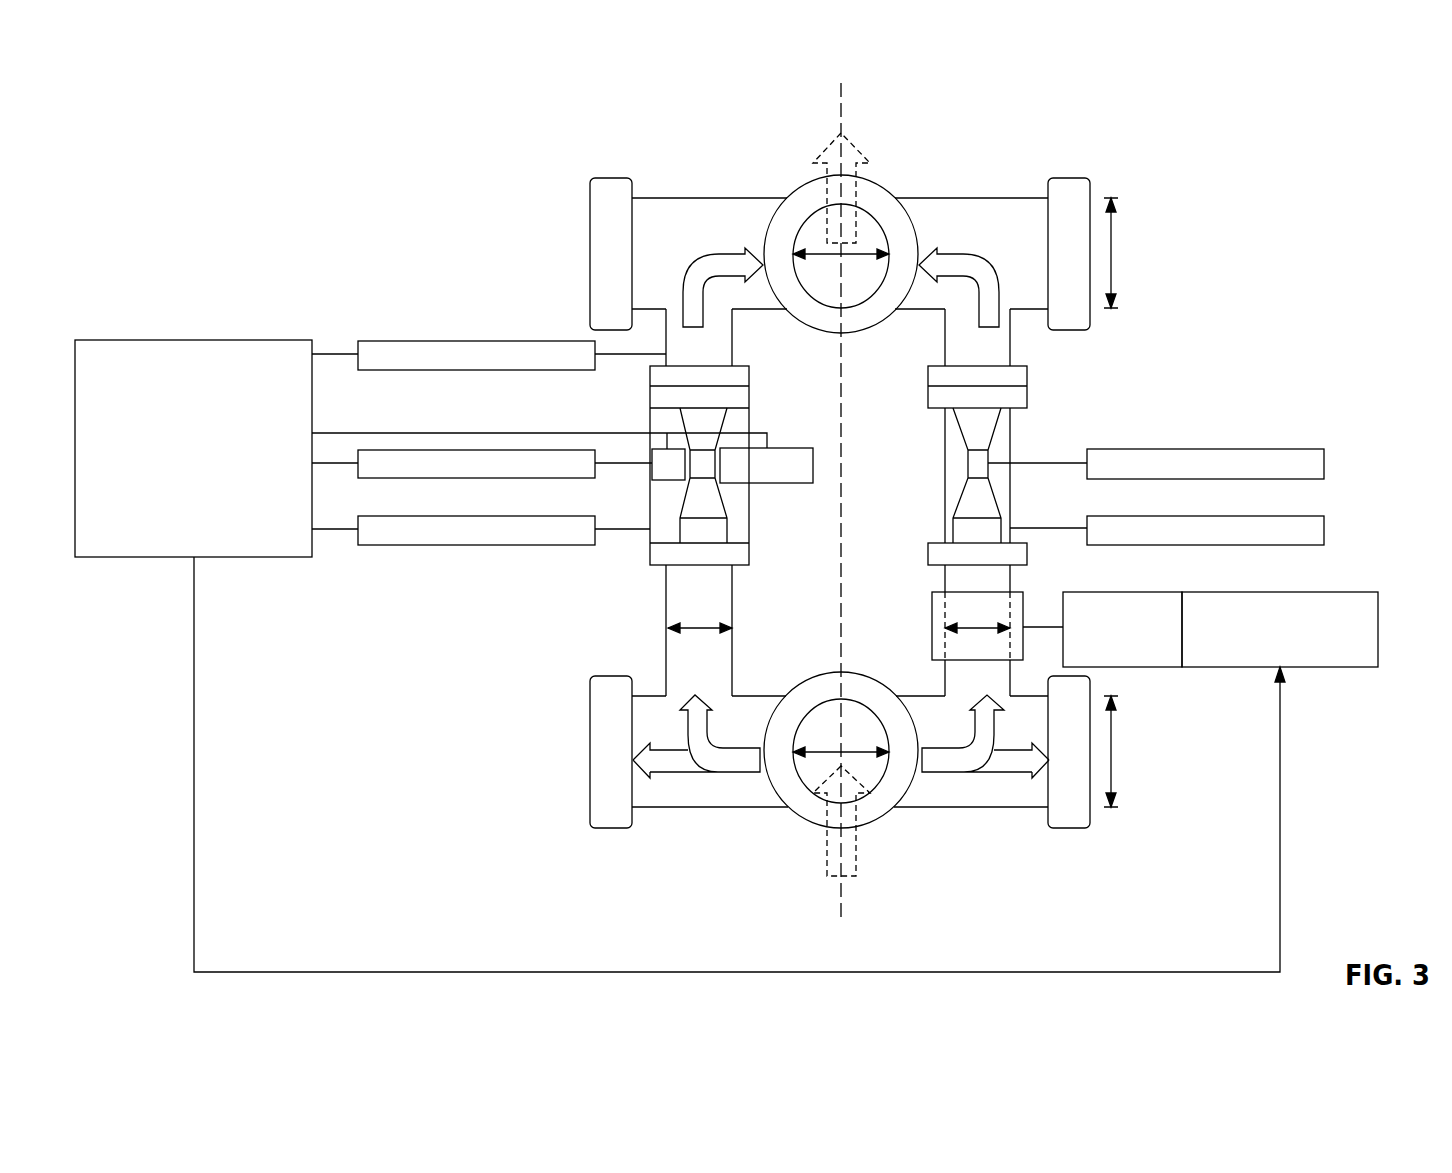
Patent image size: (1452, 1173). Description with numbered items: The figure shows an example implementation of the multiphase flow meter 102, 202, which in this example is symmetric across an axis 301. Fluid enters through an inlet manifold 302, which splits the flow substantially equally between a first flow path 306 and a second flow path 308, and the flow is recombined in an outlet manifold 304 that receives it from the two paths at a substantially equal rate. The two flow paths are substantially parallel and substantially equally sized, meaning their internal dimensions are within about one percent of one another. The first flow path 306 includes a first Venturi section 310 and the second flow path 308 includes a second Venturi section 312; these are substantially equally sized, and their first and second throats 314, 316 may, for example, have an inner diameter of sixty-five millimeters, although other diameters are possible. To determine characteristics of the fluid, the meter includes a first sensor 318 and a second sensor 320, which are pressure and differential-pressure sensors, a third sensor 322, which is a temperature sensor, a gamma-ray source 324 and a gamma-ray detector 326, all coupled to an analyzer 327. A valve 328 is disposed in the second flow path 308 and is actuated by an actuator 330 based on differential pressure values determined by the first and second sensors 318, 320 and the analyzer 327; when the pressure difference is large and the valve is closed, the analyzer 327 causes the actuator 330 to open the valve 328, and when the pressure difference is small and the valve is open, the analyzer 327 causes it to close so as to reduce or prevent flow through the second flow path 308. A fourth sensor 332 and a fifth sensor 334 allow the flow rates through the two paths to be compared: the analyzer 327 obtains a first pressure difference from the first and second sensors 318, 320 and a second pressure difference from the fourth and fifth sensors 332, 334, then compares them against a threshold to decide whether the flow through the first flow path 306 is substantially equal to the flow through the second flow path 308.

The multiphase flow meter 102 is at (1189, 115).
The multiphase flow meter 202 is at (931, 501).
The axis 301 is at (840, 122).
The inlet manifold 302 is at (670, 807).
The outlet manifold 304 is at (648, 198).
The first flow path 306 is at (668, 602).
The second flow path 308 is at (1012, 583).
The first Venturi section 310 is at (750, 553).
The second Venturi section 312 is at (940, 565).
The first throat 314 is at (703, 480).
The second throat 316 is at (977, 450).
The first sensor 318 is at (428, 516).
The second sensor 320 is at (442, 450).
The third sensor 322 is at (428, 341).
The source 324 is at (665, 485).
The detector 326 is at (785, 448).
The analyzer 327 is at (242, 340).
The valve 328 is at (1117, 592).
The actuator 330 is at (1292, 592).
The fourth sensor 332 is at (1253, 516).
The fifth sensor 334 is at (1253, 449).